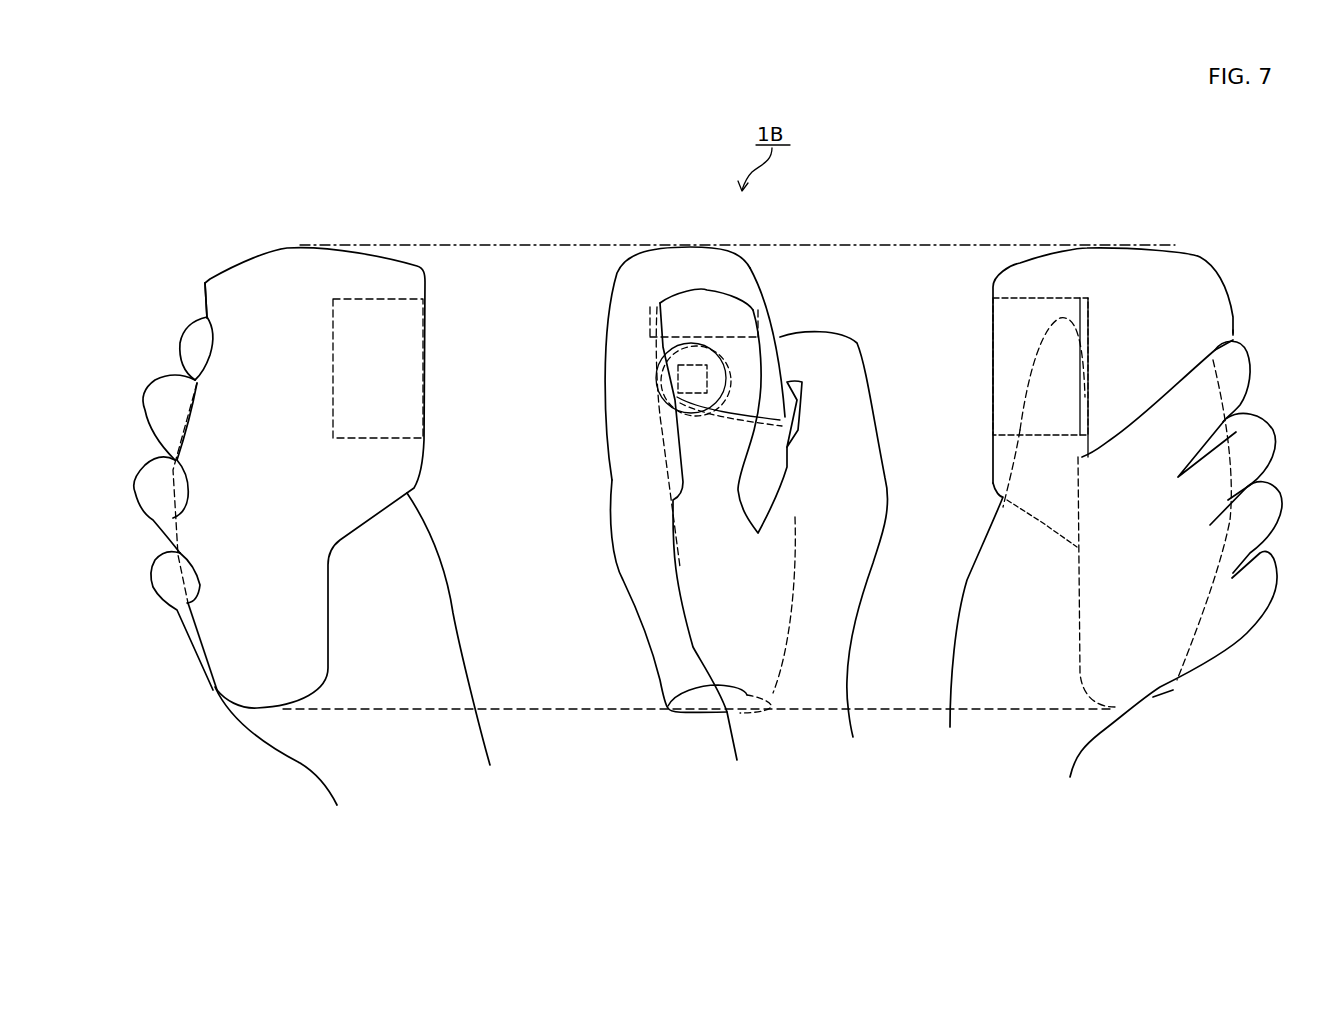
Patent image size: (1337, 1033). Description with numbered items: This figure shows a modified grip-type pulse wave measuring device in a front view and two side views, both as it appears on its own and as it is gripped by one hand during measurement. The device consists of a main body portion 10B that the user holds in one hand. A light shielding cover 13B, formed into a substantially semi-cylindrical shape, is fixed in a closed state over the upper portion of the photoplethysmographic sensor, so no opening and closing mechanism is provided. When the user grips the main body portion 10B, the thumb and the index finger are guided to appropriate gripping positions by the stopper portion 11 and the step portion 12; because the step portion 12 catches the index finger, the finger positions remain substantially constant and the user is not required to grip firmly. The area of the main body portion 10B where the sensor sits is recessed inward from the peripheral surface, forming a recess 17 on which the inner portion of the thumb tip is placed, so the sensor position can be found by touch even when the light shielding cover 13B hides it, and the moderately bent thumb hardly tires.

The main body portion 10B is at (213, 643).
The stopper portion 11 is at (368, 506).
The step portion 12 is at (197, 310).
The light shielding cover 13B is at (415, 394).
The recess 17 is at (1092, 347).